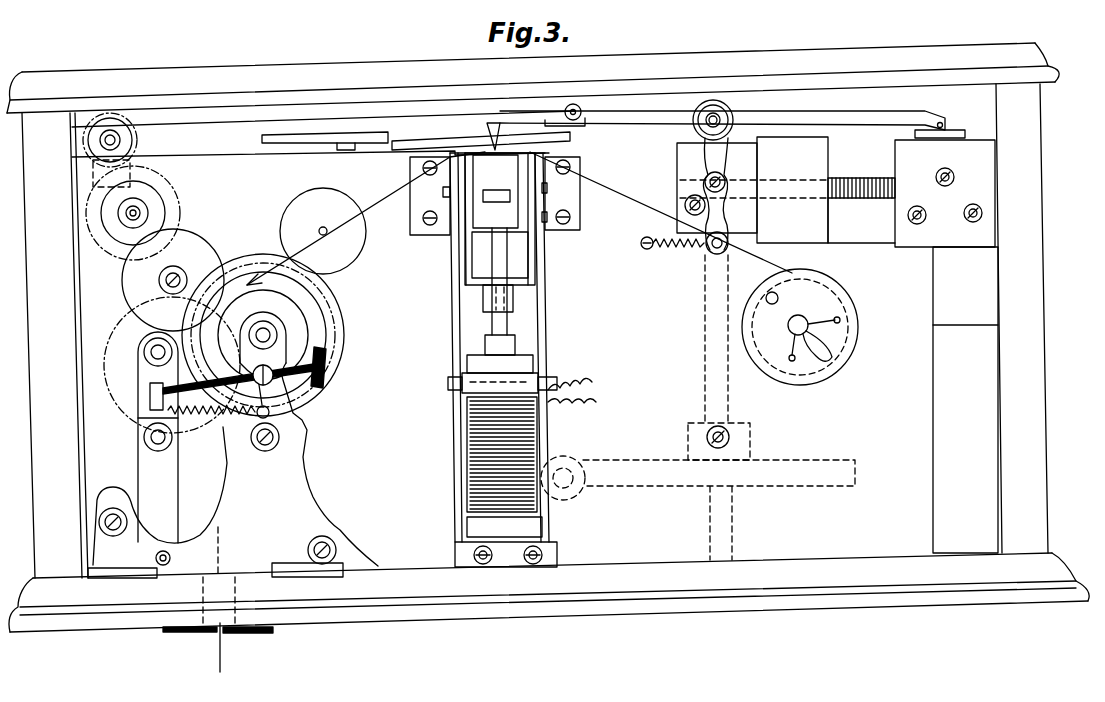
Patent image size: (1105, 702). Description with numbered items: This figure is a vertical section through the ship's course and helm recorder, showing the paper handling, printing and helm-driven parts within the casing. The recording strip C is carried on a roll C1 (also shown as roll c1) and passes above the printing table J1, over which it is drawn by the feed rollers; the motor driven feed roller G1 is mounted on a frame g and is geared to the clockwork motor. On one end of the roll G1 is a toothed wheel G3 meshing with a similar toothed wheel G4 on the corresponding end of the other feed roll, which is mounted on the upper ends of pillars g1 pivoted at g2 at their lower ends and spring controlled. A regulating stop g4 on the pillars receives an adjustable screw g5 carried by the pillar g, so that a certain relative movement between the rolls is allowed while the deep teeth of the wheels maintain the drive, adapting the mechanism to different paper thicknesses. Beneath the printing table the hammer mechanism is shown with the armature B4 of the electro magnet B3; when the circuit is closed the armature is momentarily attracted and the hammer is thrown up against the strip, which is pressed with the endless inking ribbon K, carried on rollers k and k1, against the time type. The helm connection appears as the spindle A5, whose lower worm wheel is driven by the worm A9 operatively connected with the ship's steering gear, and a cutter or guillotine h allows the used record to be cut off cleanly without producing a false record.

The roller k is at (83, 144).
The roller k1 is at (710, 100).
The endless inking ribbon K is at (237, 157).
The recording strip C is at (334, 231).
The roll C1 is at (653, 210).
The printing table J1 is at (487, 155).
The toothed wheel G4 is at (116, 312).
The toothed wheel G3 is at (312, 310).
The feed roller G1 is at (327, 367).
The adjustable screw g5 is at (293, 377).
The regulating stop g4 is at (152, 390).
The pillar g1 is at (160, 496).
The frame g is at (290, 460).
The pivot g2 is at (158, 565).
The armature B4 is at (448, 385).
The electro magnet B3 is at (472, 455).
The spindle A5 is at (706, 373).
The roll c1 is at (862, 337).
The worm A9 is at (573, 493).
The cutter or guillotine h is at (220, 632).